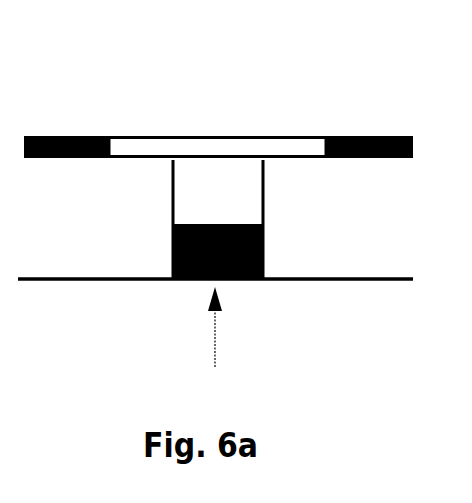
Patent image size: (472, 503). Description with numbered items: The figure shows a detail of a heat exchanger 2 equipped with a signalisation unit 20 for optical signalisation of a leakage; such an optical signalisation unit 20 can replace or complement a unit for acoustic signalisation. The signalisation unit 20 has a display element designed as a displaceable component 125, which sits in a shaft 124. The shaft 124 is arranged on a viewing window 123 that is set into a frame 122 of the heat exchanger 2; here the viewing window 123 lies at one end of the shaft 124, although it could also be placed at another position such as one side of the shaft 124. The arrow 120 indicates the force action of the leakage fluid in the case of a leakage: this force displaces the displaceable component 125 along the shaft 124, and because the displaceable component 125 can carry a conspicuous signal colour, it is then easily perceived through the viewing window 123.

The heat exchanger 2 is at (94, 68).
The signalisation unit 20 is at (88, 255).
The arrow 120 is at (215, 350).
The frame 122 is at (368, 137).
The viewing window 123 is at (210, 137).
The shaft 124 is at (255, 177).
The displaceable component 125 is at (267, 252).